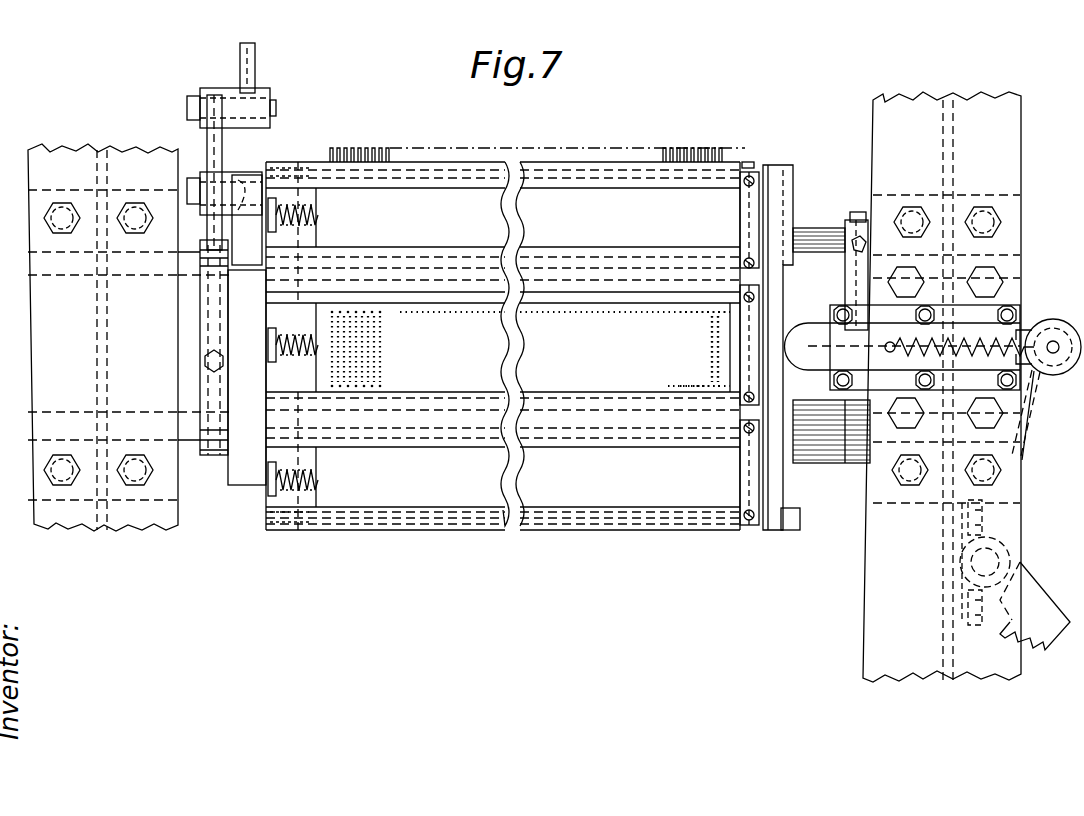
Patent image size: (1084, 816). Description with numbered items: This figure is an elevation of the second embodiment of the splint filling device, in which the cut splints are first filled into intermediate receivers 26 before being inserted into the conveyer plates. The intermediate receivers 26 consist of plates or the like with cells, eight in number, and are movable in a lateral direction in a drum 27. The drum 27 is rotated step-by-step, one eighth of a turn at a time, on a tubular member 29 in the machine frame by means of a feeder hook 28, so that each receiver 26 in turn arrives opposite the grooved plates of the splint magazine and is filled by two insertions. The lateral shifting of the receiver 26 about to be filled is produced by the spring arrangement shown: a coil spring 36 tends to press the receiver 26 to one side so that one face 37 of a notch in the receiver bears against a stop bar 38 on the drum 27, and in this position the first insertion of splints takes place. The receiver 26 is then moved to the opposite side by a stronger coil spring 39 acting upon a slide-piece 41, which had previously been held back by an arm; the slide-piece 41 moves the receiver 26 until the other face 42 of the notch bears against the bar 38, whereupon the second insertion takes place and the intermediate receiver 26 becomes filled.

The intermediate receiver 26 is at (505, 339).
The drum 27 is at (821, 433).
The feeder hook 28 is at (239, 210).
The tubular member 29 is at (103, 337).
The coil spring 36 is at (312, 218).
The face of notch 37 is at (726, 317).
The stop bar 38 is at (746, 346).
The stronger coil spring 39 is at (976, 340).
The slide-piece 41 is at (902, 346).
The other face of notch 42 is at (762, 314).